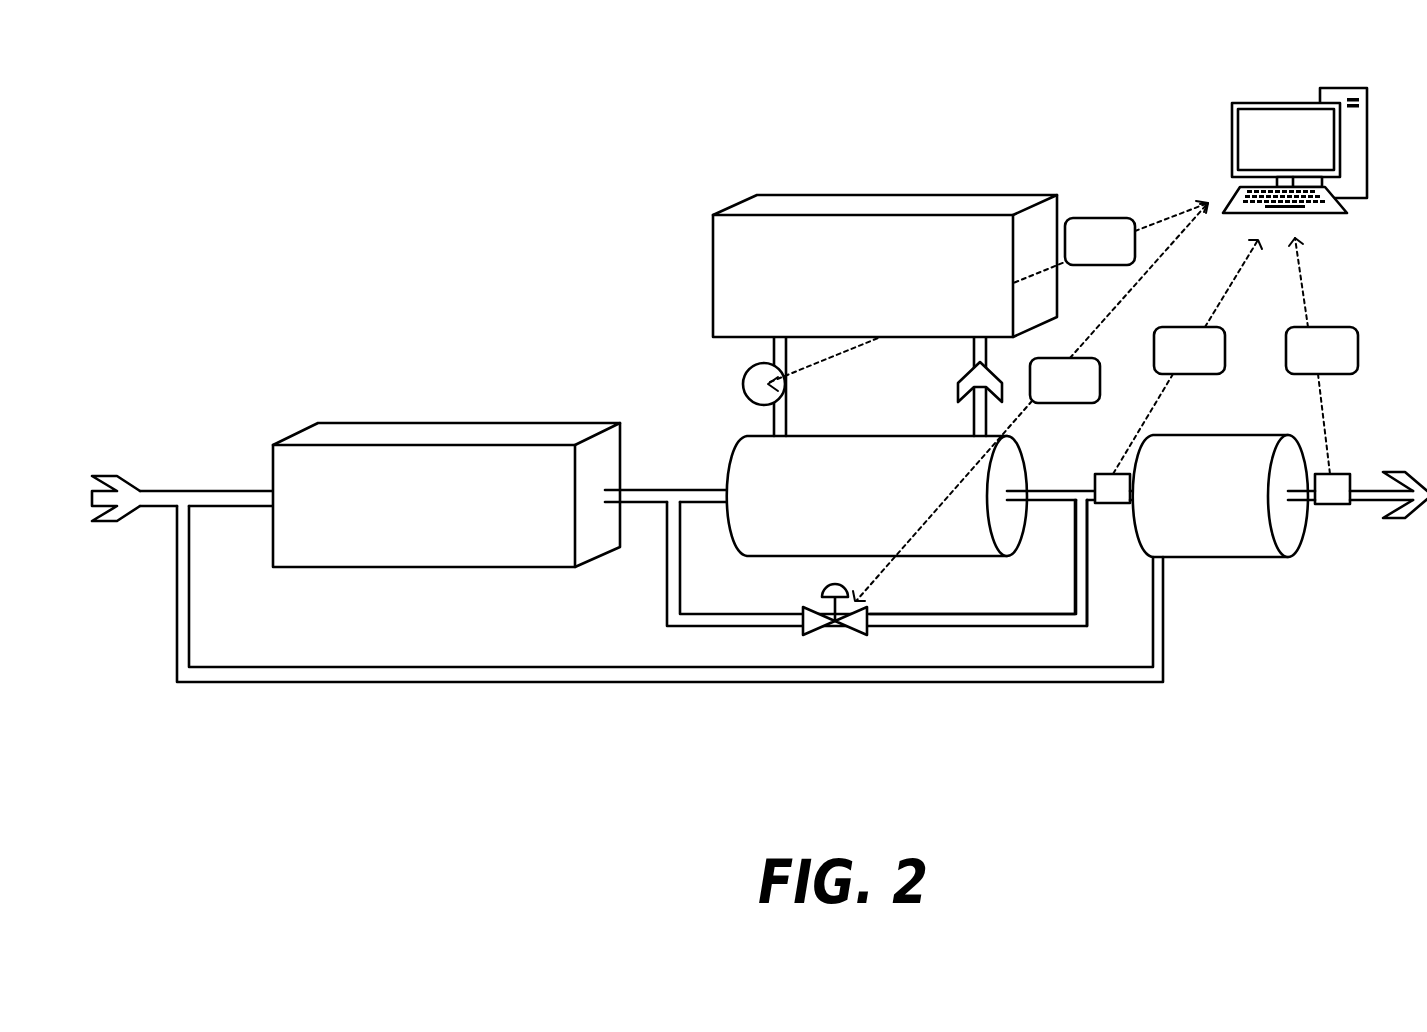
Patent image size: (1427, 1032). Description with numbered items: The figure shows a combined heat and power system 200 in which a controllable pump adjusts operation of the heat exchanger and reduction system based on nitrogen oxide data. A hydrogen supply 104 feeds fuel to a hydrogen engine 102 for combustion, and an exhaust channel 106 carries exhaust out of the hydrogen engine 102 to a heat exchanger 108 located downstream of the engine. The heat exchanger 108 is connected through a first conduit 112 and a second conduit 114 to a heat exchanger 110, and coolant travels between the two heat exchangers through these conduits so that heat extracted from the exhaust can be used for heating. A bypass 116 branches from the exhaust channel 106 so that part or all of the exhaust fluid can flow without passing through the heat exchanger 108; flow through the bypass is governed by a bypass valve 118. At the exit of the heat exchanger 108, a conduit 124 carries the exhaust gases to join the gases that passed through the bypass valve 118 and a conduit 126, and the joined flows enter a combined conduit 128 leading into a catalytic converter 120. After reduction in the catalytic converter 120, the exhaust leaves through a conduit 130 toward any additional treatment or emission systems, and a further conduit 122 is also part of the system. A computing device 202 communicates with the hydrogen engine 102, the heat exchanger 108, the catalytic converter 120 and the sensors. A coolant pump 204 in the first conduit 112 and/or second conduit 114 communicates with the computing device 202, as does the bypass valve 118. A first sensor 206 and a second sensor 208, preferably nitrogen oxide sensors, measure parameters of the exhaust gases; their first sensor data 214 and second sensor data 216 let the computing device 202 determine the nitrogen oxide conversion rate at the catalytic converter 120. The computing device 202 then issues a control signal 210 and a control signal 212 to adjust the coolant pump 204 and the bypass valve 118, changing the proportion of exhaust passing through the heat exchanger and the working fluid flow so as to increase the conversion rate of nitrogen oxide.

The combined heat and power system 200 is at (466, 228).
The hydrogen engine 102 is at (413, 517).
The hydrogen supply 104 is at (140, 490).
The exhaust channel 106 is at (628, 490).
The heat exchanger 108 is at (865, 507).
The heat exchanger 110 is at (853, 284).
The first conduit 112 is at (786, 418).
The second conduit 114 is at (974, 425).
The bypass 116 is at (667, 563).
The bypass valve 118 is at (803, 610).
The catalytic converter 120 is at (1195, 511).
The conduit 122 is at (217, 666).
The conduit 124 is at (1027, 446).
The conduit 126 is at (943, 614).
The combined conduit 128 is at (1093, 503).
The conduit 130 is at (1363, 488).
The computing device 202 is at (1330, 88).
The coolant pump 204 is at (742, 393).
The first sensor 206 is at (1113, 488).
The second sensor 208 is at (1332, 488).
The control signal 210 is at (1085, 255).
The control signal 212 is at (1050, 394).
The first sensor data 214 is at (1175, 365).
The second sensor data 216 is at (1307, 365).